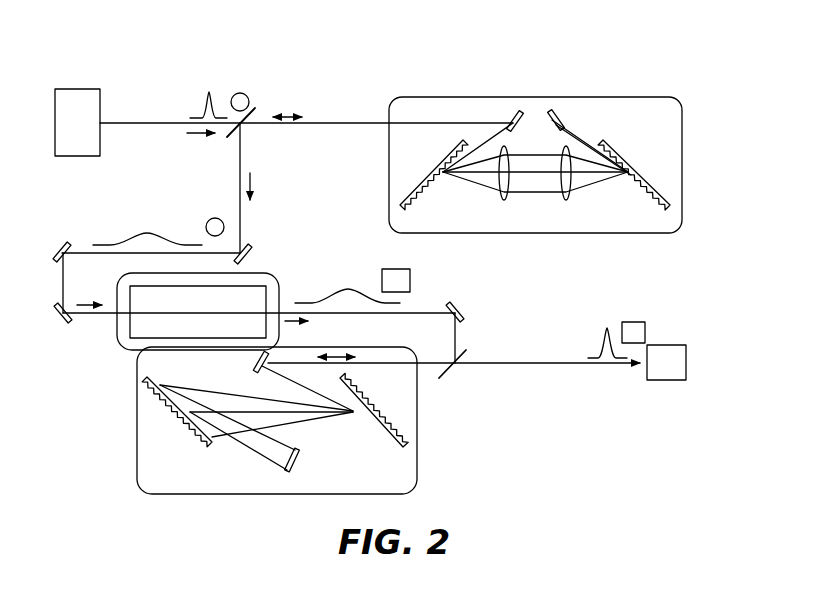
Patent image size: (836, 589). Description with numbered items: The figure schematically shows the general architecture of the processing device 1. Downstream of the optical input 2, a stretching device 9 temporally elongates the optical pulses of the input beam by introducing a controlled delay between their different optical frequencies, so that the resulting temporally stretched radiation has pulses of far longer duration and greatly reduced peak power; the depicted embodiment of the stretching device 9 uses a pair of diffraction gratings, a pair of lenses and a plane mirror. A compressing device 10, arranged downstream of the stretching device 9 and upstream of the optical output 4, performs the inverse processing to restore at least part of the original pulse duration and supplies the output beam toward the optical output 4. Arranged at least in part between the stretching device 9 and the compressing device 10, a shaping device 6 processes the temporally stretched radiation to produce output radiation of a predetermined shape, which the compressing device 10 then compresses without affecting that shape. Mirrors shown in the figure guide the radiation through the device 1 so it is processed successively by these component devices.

The processing device 1 is at (552, 466).
The optical input 2 is at (67, 88).
The optical output 4 is at (670, 382).
The shaping device 6 is at (118, 340).
The stretching device 9 is at (682, 154).
The compressing device 10 is at (137, 445).